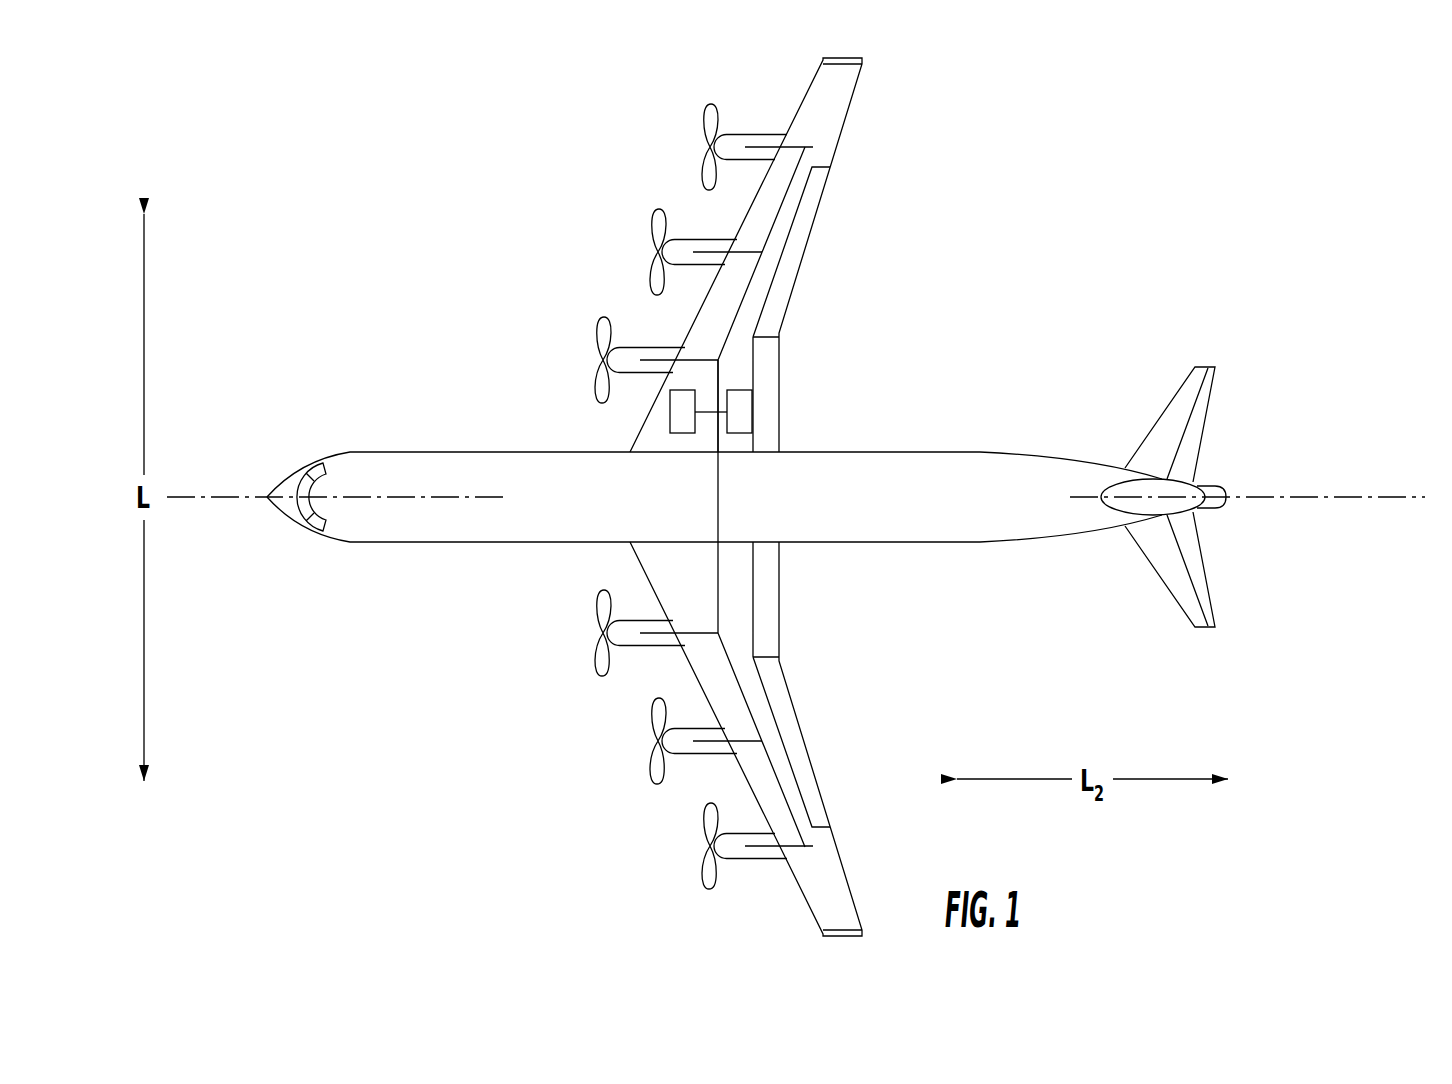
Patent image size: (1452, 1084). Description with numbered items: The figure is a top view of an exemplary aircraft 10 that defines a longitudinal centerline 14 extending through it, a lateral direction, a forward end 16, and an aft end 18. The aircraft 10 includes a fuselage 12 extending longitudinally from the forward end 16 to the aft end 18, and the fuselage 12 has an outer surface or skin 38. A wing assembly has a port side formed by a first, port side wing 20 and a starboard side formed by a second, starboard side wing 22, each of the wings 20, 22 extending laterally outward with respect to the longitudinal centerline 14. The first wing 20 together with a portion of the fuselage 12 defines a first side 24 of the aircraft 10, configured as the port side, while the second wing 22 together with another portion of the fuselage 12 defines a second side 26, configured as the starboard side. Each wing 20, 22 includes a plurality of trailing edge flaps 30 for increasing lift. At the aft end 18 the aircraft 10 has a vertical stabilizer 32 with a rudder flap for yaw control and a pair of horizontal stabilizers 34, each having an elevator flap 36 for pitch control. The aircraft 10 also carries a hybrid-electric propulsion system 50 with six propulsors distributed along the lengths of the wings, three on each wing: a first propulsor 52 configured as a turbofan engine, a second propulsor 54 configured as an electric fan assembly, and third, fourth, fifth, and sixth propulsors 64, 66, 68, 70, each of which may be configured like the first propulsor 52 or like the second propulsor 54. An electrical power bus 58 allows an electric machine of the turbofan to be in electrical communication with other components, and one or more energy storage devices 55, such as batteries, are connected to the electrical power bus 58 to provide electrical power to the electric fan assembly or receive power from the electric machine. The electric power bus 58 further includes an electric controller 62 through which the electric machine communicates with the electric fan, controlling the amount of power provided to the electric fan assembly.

The aircraft 10 is at (978, 172).
The fuselage 12 is at (688, 553).
The longitudinal centerline 14 is at (209, 500).
The forward end 16 is at (262, 548).
The aft end 18 is at (1188, 508).
The first, port side wing 20 is at (774, 497).
The second, starboard side wing 22 is at (833, 115).
The first side of the aircraft 24 is at (646, 770).
The second side of the aircraft 26 is at (639, 229).
The trailing edge flaps 30 is at (815, 776).
The vertical stabilizer 32 is at (1226, 510).
The horizontal stabilizers 34 is at (1208, 472).
The elevator flap 36 is at (1215, 413).
The outer surface or skin 38 is at (943, 514).
The propulsion system 50 is at (650, 502).
The first propulsor 52 is at (590, 657).
The second propulsor 54 is at (572, 335).
The energy storage devices 55 is at (752, 426).
The electrical power bus 58 is at (732, 382).
The electric controller 62 is at (670, 428).
The third propulsor 64 is at (638, 203).
The fourth propulsor 66 is at (693, 100).
The fifth propulsor 68 is at (640, 789).
The sixth propulsor 70 is at (693, 894).